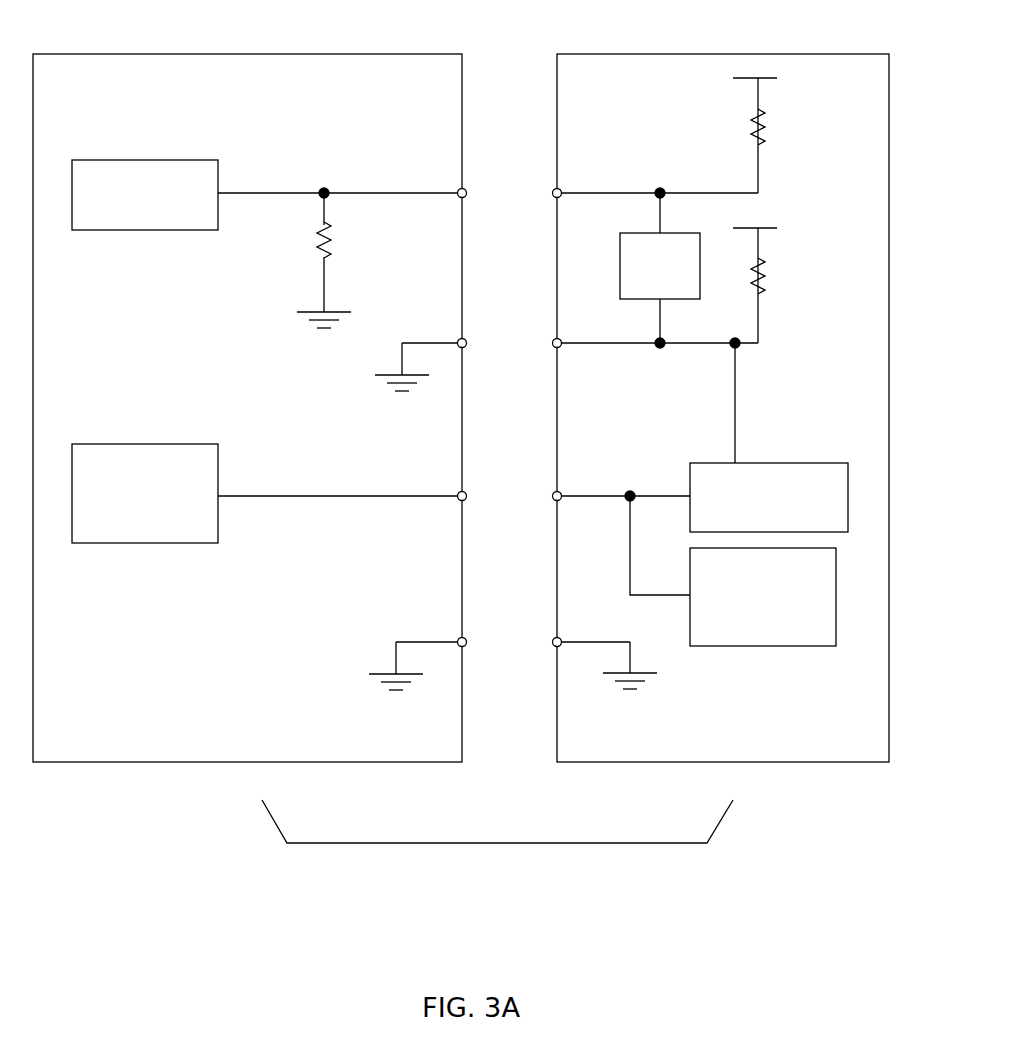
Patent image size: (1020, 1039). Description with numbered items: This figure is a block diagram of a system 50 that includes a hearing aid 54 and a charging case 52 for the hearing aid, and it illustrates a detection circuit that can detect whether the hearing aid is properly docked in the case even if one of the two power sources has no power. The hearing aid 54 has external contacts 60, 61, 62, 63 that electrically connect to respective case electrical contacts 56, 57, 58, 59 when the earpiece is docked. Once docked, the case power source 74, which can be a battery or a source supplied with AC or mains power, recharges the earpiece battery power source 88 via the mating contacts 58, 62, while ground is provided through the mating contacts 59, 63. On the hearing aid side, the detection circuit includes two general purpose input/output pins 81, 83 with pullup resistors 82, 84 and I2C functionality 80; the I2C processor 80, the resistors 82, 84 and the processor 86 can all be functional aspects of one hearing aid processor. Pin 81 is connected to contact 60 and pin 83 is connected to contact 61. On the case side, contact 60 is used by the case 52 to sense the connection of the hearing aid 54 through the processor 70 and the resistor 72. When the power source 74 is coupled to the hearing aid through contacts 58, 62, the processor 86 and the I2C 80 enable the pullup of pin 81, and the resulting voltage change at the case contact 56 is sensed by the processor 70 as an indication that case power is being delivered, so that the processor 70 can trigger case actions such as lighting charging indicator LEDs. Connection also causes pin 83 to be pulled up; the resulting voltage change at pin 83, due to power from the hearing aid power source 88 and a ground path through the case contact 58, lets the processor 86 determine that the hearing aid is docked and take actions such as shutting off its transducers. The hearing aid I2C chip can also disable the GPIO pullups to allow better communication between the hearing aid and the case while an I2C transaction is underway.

The system 50 is at (203, 887).
The charging case 52 is at (143, 745).
The hearing aid 54 is at (805, 745).
The case electrical contact 56 is at (467, 190).
The case electrical contact 57 is at (467, 340).
The case electrical contact 58 is at (467, 492).
The case electrical contact 59 is at (467, 639).
The hearing aid external contact 60 is at (553, 196).
The hearing aid external contact 61 is at (553, 346).
The hearing aid external contact 62 is at (553, 498).
The hearing aid external contact 63 is at (553, 645).
The case processor 70 is at (187, 160).
The resistor 72 is at (318, 248).
The case power source 74 is at (175, 444).
The I2C functionality 80 is at (620, 268).
The general purpose input/output pin 81 is at (725, 192).
The pullup resistor 82 is at (768, 130).
The general purpose input/output pin 83 is at (712, 343).
The pullup resistor 84 is at (768, 270).
The hearing aid processor 86 is at (805, 463).
The hearing aid power source 88 is at (807, 647).